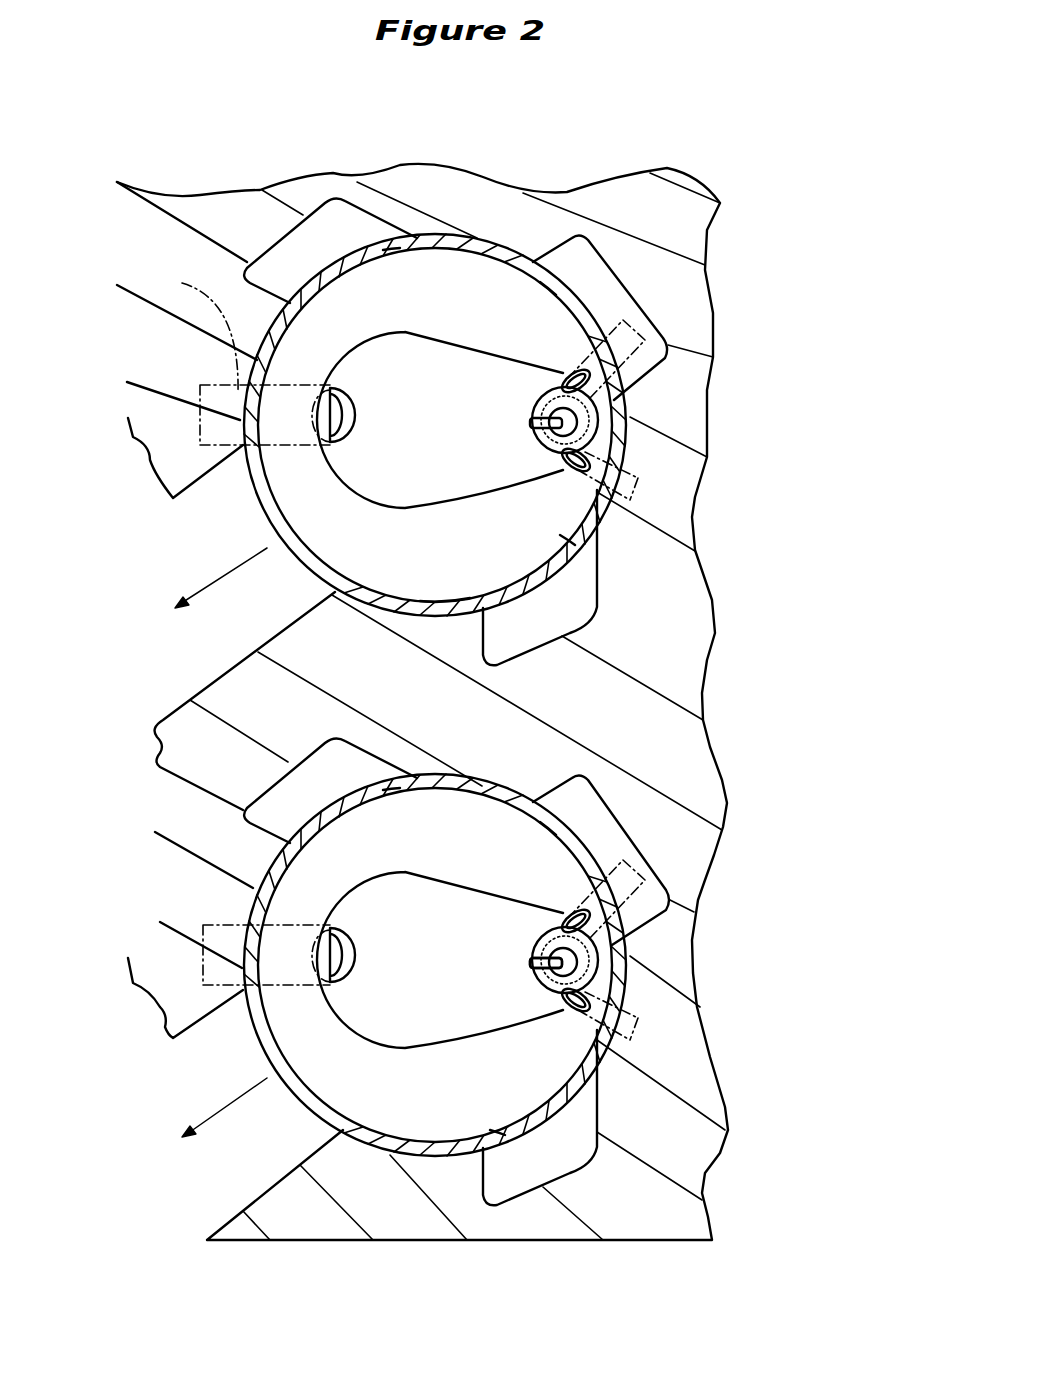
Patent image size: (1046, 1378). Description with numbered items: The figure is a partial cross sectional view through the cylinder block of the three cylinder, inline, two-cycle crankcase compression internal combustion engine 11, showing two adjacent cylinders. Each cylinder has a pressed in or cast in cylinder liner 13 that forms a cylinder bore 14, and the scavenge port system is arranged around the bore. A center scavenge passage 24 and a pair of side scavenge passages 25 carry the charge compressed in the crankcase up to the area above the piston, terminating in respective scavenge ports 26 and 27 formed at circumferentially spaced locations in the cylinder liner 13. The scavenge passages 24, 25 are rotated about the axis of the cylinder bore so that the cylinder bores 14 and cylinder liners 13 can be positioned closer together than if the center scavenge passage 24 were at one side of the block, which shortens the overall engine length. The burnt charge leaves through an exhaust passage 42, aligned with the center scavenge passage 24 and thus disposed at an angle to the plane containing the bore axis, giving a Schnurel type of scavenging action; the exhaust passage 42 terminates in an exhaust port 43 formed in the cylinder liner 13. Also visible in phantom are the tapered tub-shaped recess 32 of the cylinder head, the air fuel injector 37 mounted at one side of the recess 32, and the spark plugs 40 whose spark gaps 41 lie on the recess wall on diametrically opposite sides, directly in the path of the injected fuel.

The internal combustion engine 11 is at (740, 584).
The cylinder liner 13 is at (537, 612).
The cylinder bore 14 is at (407, 597).
The center scavenge passage 24 is at (547, 305).
The side scavenge passage 25 is at (368, 288).
The scavenge port 26 is at (545, 285).
The scavenge port 27 is at (388, 252).
The recess 32 is at (497, 422).
The air fuel injector 37 is at (210, 925).
The spark plug 40 is at (540, 408).
The spark gap 41 is at (545, 950).
The exhaust passage 42 is at (235, 538).
The exhaust port 43 is at (273, 500).